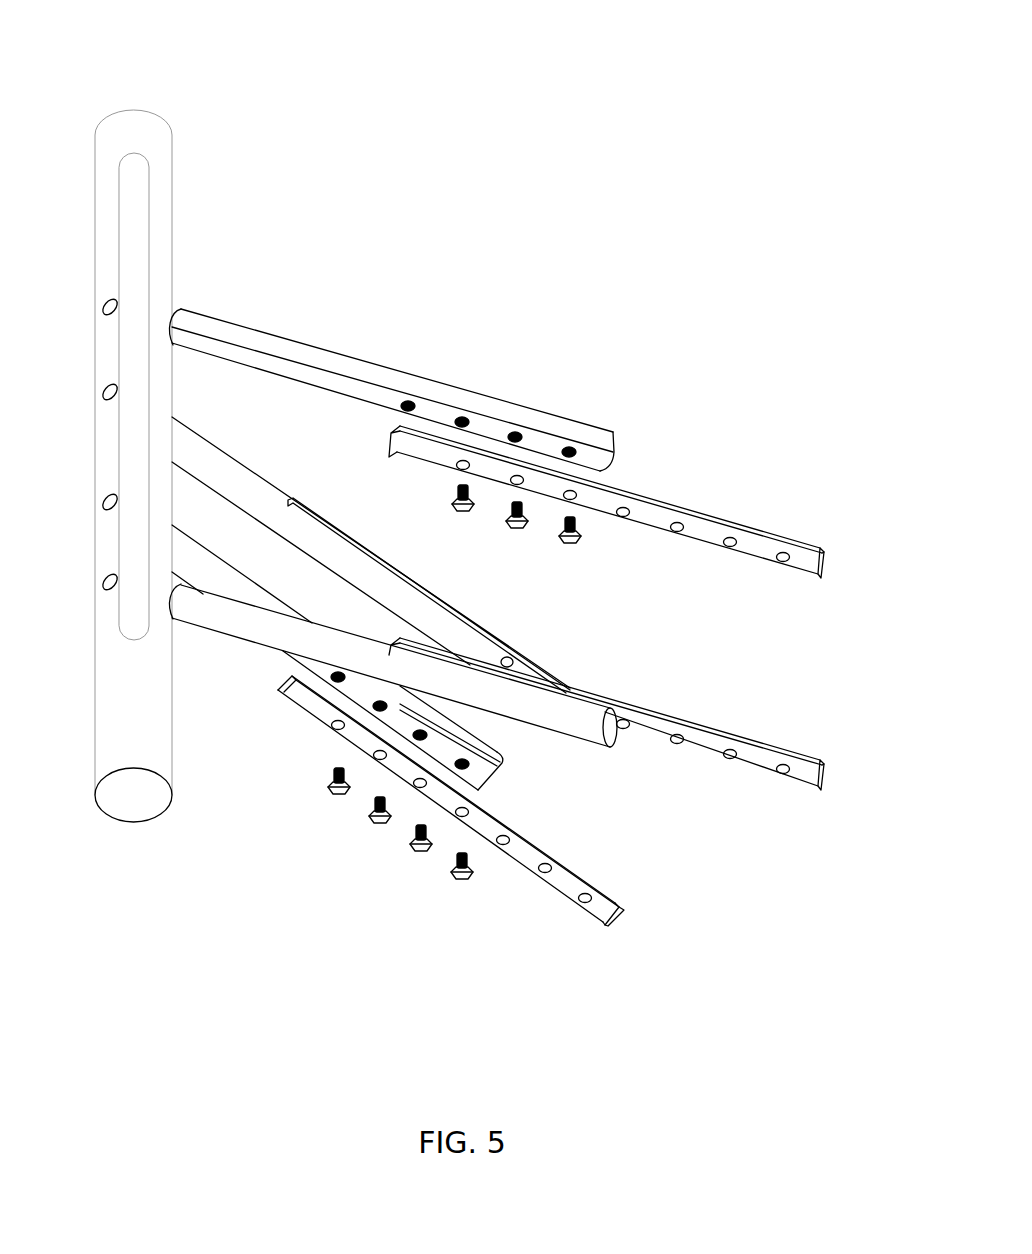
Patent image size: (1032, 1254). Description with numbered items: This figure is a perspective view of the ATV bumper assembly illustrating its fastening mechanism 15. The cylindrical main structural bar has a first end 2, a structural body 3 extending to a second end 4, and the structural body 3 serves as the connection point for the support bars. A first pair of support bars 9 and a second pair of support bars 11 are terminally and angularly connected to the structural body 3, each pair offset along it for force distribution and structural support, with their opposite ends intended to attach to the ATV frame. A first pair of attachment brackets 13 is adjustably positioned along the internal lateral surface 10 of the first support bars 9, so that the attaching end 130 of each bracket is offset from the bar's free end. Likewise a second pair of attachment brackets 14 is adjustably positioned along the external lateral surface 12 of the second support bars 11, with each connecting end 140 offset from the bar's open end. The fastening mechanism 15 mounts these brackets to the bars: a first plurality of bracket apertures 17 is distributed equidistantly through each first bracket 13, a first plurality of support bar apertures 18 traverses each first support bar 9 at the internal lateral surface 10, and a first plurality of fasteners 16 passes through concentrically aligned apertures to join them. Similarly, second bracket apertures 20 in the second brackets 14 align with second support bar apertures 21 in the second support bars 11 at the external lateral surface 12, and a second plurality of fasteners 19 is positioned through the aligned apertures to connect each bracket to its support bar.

The first end 2 is at (155, 112).
The structural body 3 is at (105, 203).
The second end 4 is at (133, 808).
The first pair of support bars 9 is at (273, 345).
The internal lateral surface 10 is at (333, 387).
The second pair of support bars 11 is at (247, 480).
The external lateral surface 12 is at (485, 780).
The first pair of attachment brackets 13 is at (812, 572).
The second pair of attachment brackets 14 is at (305, 710).
The fastening mechanism 15 is at (602, 608).
The first plurality of fasteners 16 is at (463, 508).
The first plurality of bracket apertures 17 is at (624, 520).
The first plurality of support bar apertures 18 is at (470, 420).
The second plurality of fasteners 19 is at (380, 820).
The second plurality of bracket apertures 20 is at (555, 869).
The second plurality of support bar apertures 21 is at (430, 736).
The attaching end 130 is at (826, 562).
The connecting end 140 is at (628, 912).